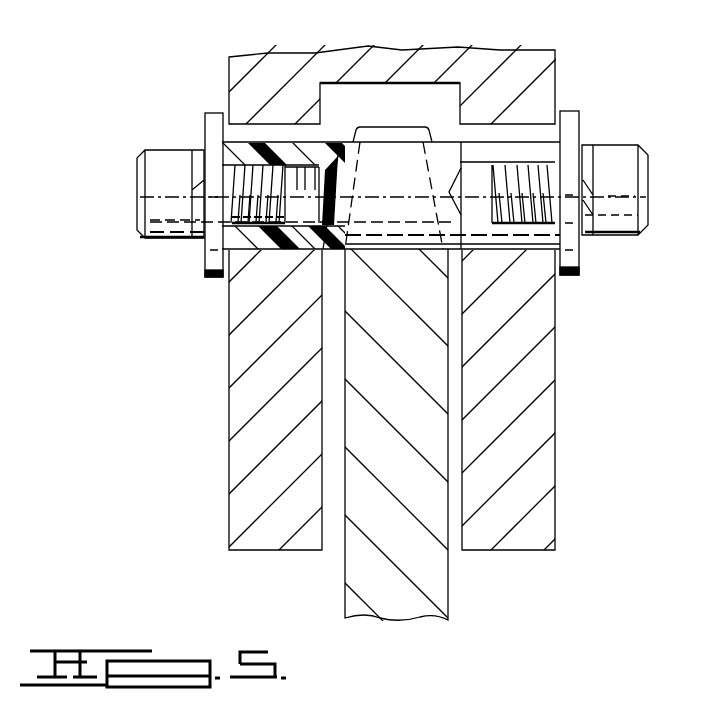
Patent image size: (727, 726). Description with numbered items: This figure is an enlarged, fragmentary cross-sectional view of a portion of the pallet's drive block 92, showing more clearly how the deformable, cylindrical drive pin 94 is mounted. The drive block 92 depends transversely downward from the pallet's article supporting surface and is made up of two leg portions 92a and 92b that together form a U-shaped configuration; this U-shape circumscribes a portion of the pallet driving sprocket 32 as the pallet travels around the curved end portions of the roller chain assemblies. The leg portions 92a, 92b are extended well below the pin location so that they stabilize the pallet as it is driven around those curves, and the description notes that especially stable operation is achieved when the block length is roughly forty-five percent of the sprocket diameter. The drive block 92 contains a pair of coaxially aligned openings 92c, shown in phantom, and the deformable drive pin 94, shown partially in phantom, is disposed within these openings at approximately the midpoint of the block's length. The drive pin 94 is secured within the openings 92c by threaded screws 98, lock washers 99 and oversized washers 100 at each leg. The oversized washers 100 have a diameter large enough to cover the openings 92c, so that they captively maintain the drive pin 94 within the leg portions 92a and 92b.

The pallet driving sprocket 32 is at (382, 634).
The drive block 92 is at (207, 68).
The leg portion 92a is at (250, 524).
The leg portion 92b is at (540, 524).
The coaxially aligned openings 92c is at (273, 125).
The deformable drive pin 94 is at (510, 240).
The threaded screws 98 is at (153, 198).
The lock washers 99 is at (200, 238).
The oversized washers 100 is at (214, 281).